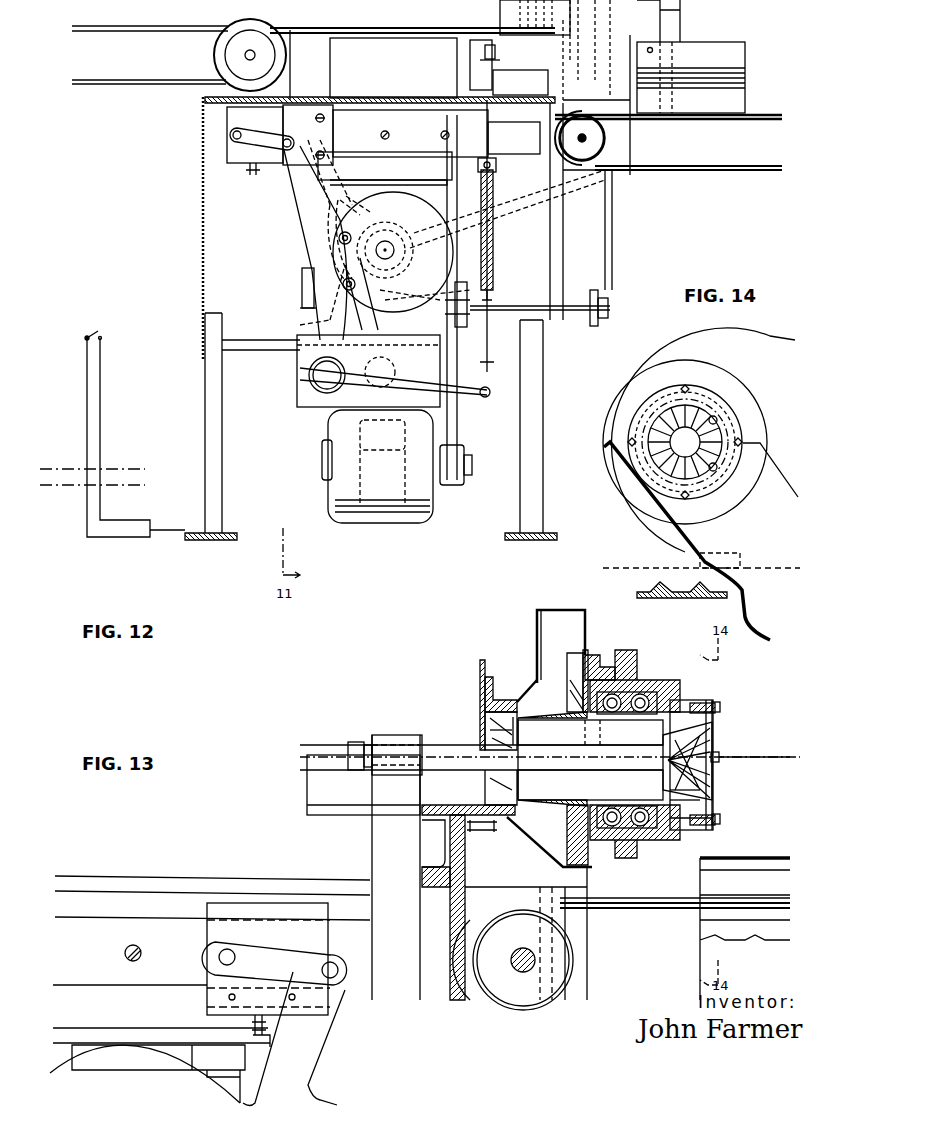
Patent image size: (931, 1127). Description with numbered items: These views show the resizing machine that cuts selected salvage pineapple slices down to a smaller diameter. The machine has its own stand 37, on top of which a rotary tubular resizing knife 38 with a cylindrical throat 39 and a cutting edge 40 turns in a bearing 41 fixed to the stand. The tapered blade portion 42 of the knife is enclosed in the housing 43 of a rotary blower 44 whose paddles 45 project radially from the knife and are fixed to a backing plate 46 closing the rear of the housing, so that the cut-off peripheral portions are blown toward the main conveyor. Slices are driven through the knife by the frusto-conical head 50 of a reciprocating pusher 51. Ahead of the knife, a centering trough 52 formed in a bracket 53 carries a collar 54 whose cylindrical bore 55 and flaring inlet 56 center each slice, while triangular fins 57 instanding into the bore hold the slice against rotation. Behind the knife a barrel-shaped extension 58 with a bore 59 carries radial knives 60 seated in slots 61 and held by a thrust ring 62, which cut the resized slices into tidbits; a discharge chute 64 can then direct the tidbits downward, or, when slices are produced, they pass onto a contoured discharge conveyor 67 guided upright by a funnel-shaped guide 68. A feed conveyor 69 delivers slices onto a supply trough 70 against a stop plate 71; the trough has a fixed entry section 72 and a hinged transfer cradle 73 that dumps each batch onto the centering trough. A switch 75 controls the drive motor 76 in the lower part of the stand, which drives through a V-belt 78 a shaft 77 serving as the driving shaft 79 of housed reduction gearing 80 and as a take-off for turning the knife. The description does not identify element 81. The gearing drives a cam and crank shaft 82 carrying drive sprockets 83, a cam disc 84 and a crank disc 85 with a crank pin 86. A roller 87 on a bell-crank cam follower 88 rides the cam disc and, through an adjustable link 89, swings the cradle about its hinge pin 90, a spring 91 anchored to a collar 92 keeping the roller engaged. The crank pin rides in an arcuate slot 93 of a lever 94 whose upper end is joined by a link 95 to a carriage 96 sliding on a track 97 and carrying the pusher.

In FIG. 12, the stand 37 is at (203, 408).
In FIG. 13, the resizing knife 38 is at (552, 707).
In FIG. 13, the throat 39 is at (550, 772).
In FIG. 13, the cutting edge 40 is at (516, 740).
In FIG. 14, the bearing 41 is at (688, 362).
In FIG. 13, the bearing 41 is at (640, 662).
In FIG. 13, the blade portion 42 is at (528, 716).
In FIG. 13, the housing 43 is at (528, 690).
In FIG. 12, the rotary blower 44 is at (584, 79).
In FIG. 13, the rotary blower 44 is at (562, 597).
In FIG. 13, the blades 45 is at (567, 660).
In FIG. 13, the backing plate 46 is at (590, 655).
In FIG. 13, the head 50 is at (718, 752).
In FIG. 12, the pusher 51 is at (388, 42).
In FIG. 13, the pusher 51 is at (548, 724).
In FIG. 12, the centering trough 52 is at (476, 62).
In FIG. 13, the centering trough 52 is at (364, 775).
In FIG. 12, the bracket 53 is at (545, 85).
In FIG. 13, the bracket 53 is at (468, 862).
In FIG. 13, the collar 54 is at (495, 690).
In FIG. 13, the bore 55 is at (485, 722).
In FIG. 13, the inlet 56 is at (485, 736).
In FIG. 13, the fins 57 is at (486, 782).
In FIG. 14, the rearward extension 58 is at (700, 388).
In FIG. 13, the rearward extension 58 is at (688, 700).
In FIG. 14, the bore 59 is at (712, 418).
In FIG. 13, the bore 59 is at (668, 740).
In FIG. 14, the knives 60 is at (652, 412).
In FIG. 13, the knives 60 is at (670, 790).
In FIG. 14, the slots 61 is at (645, 420).
In FIG. 13, the slots 61 is at (670, 800).
In FIG. 14, the thrust ring 62 is at (670, 390).
In FIG. 13, the thrust ring 62 is at (712, 700).
In FIG. 14, the discharge chute 64 is at (785, 470).
In FIG. 13, the discharge chute 64 is at (700, 866).
In FIG. 12, the discharge conveyor 67 is at (766, 113).
In FIG. 14, the discharge conveyor 67 is at (682, 583).
In FIG. 13, the discharge conveyor 67 is at (650, 903).
In FIG. 12, the funnel-shaped guide 68 is at (692, 42).
In FIG. 12, the feed conveyor 69 is at (128, 26).
In FIG. 12, the supply trough 70 is at (400, 28).
In FIG. 12, the stop plate 71 is at (582, 140).
In FIG. 13, the stop plate 71 is at (480, 664).
In FIG. 12, the fixed entry section 72 is at (292, 28).
In FIG. 12, the transfer cradle 73 is at (535, 17).
In FIG. 12, the switch 75 is at (94, 330).
In FIG. 12, the drive motor 76 is at (328, 428).
In FIG. 13, the shaft 77 is at (532, 952).
In FIG. 12, the V-belt drive 78 is at (460, 420).
In FIG. 12, the driving shaft 79 is at (506, 298).
In FIG. 12, the reduction gearing 80 is at (295, 298).
In FIG. 12, the belt 81 is at (613, 218).
In FIG. 13, the belt 81 is at (580, 878).
In FIG. 12, the cam and crank shaft 82 is at (388, 258).
In FIG. 12, the drive sprockets 83 is at (410, 234).
In FIG. 12, the cam disc 84 is at (380, 290).
In FIG. 12, the crank disc 85 is at (440, 220).
In FIG. 12, the crank pin 86 is at (335, 290).
In FIG. 12, the roller 87 is at (338, 236).
In FIG. 12, the cam follower 88 is at (291, 381).
In FIG. 12, the link 89 is at (514, 138).
In FIG. 12, the hinge pin 90 is at (495, 52).
In FIG. 12, the spring 91 is at (495, 230).
In FIG. 12, the collar 92 is at (498, 172).
In FIG. 12, the arcuate slot 93 is at (350, 208).
In FIG. 12, the lever 94 is at (296, 186).
In FIG. 13, the lever 94 is at (322, 1045).
In FIG. 12, the link 95 is at (258, 138).
In FIG. 13, the link 95 is at (285, 950).
In FIG. 12, the carriage 96 is at (235, 163).
In FIG. 13, the carriage 96 is at (207, 936).
In FIG. 12, the track 97 is at (403, 147).
In FIG. 13, the track 97 is at (211, 959).